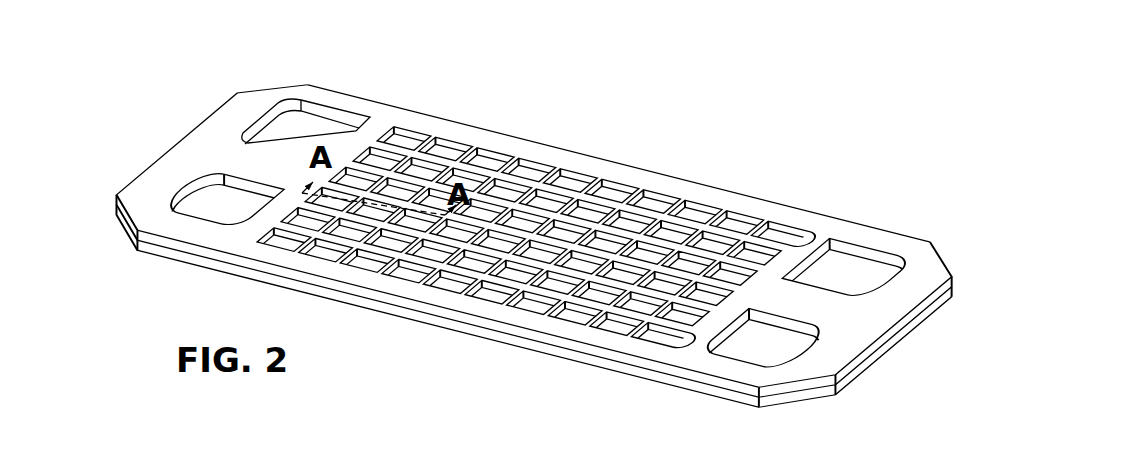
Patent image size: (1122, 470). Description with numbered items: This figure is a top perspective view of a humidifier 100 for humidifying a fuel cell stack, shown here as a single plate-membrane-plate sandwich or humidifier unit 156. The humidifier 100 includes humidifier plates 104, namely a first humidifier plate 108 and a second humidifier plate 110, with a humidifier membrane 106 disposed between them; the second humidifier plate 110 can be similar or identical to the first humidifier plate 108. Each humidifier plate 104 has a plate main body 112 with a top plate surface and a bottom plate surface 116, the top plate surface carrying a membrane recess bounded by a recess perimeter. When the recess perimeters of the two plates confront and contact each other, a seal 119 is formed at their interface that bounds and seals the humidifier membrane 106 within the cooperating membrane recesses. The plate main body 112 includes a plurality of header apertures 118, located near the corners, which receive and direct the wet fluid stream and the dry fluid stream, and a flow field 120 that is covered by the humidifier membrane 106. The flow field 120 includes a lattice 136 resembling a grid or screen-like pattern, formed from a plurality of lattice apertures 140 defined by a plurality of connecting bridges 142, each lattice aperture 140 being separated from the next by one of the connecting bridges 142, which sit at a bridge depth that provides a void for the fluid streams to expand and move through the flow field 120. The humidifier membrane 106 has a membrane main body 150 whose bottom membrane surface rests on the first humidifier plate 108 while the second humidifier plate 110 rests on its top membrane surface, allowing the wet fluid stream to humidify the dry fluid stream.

The humidifier 100 is at (874, 192).
The humidifier plate 104 is at (239, 91).
The humidifier membrane 106 is at (407, 131).
The first humidifier plate 108 is at (529, 259).
The second humidifier plate 110 is at (520, 218).
The plate main body 112 is at (549, 144).
The bottom plate surface 116 is at (724, 191).
The header apertures 118 is at (307, 100).
The seal 119 is at (120, 218).
The flow field 120 is at (751, 218).
The lattice 136 is at (765, 203).
The lattice apertures 140 is at (470, 141).
The connecting bridges 142 is at (642, 186).
The membrane main body 150 is at (417, 112).
The humidifier unit 156 is at (520, 213).